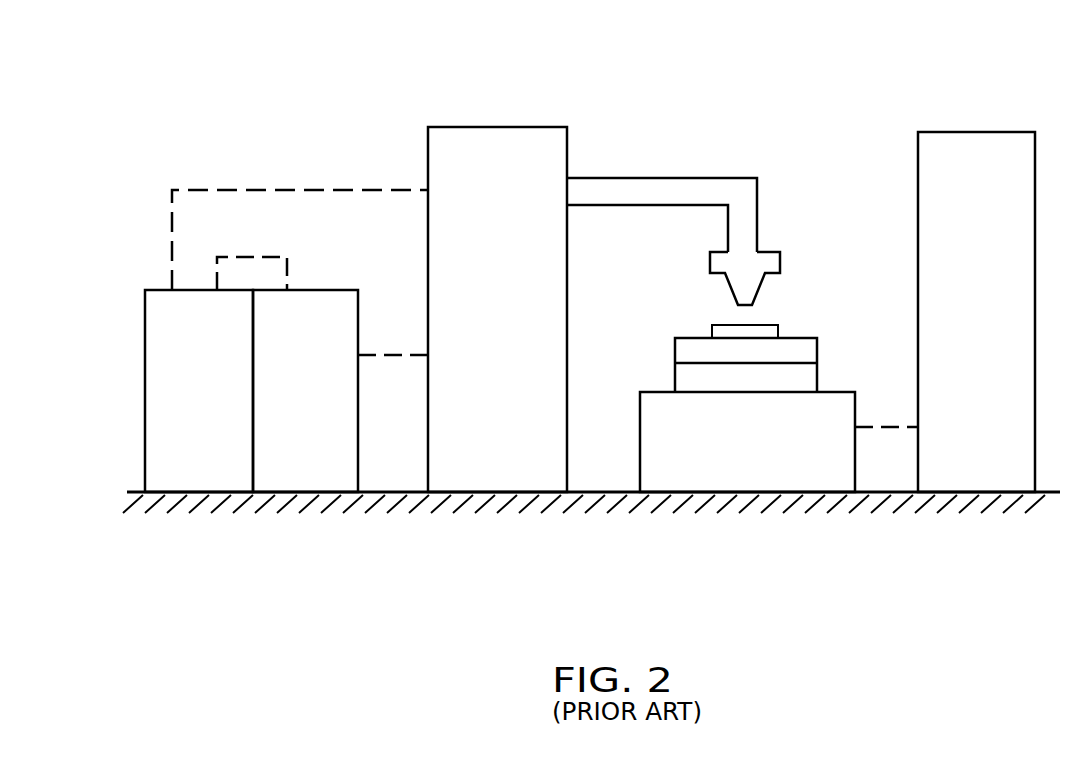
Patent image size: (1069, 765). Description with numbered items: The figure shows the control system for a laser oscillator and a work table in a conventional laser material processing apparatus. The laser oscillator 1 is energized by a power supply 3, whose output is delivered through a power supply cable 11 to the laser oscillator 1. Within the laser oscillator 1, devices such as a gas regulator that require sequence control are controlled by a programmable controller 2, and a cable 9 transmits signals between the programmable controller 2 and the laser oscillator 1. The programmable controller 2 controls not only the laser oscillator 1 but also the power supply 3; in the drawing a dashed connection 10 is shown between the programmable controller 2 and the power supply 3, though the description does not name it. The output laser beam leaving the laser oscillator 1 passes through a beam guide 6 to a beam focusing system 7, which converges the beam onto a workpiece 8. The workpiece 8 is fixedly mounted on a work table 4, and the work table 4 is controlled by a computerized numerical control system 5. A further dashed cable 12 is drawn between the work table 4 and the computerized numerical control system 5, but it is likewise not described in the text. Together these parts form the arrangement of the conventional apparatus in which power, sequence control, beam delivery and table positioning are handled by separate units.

The laser oscillator 1 is at (476, 140).
The programmable controller 2 is at (320, 290).
The power supply 3 is at (160, 303).
The work table 4 is at (670, 472).
The computerized numerical control system 5 is at (965, 146).
The beam guide 6 is at (611, 190).
The beam focusing system 7 is at (758, 263).
The workpiece 8 is at (758, 328).
The cable 9 is at (415, 358).
The cable 10 is at (250, 257).
The power supply cable 11 is at (214, 190).
The cable 12 is at (887, 430).